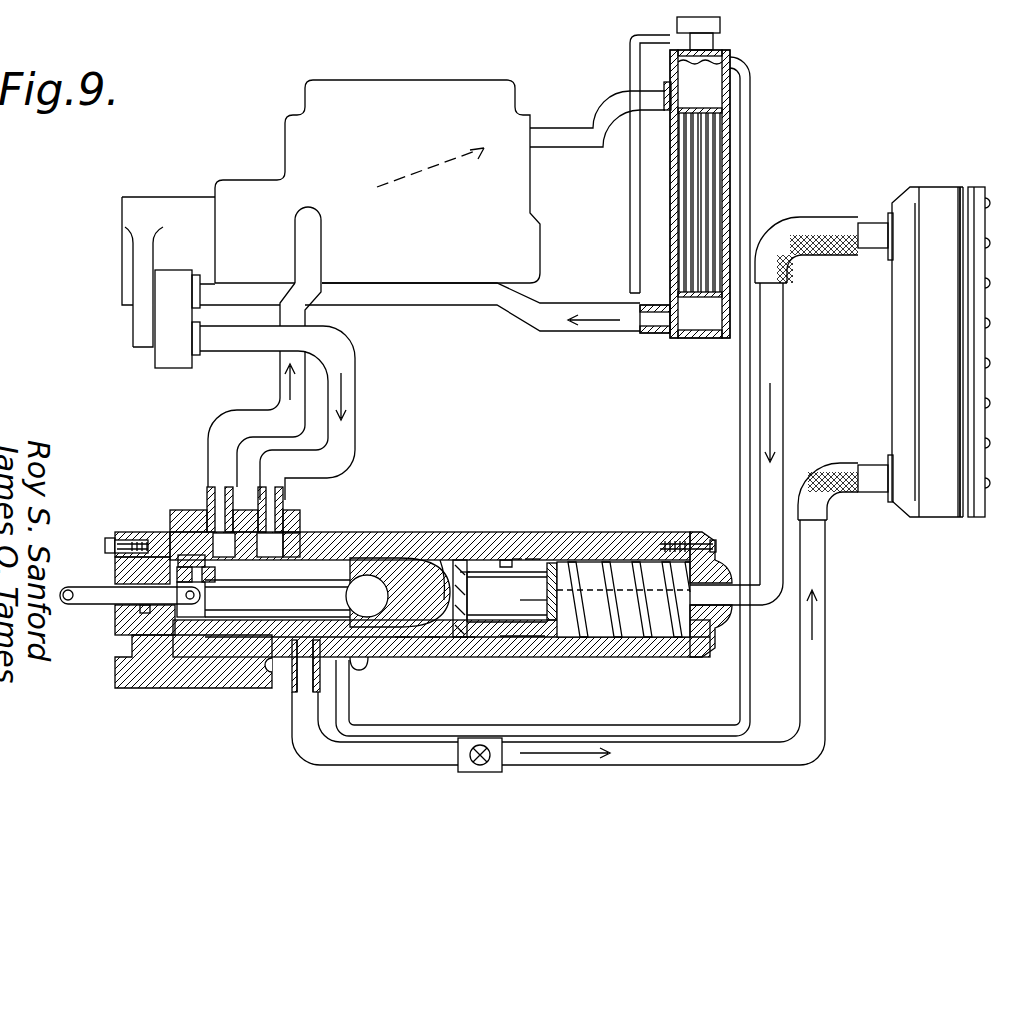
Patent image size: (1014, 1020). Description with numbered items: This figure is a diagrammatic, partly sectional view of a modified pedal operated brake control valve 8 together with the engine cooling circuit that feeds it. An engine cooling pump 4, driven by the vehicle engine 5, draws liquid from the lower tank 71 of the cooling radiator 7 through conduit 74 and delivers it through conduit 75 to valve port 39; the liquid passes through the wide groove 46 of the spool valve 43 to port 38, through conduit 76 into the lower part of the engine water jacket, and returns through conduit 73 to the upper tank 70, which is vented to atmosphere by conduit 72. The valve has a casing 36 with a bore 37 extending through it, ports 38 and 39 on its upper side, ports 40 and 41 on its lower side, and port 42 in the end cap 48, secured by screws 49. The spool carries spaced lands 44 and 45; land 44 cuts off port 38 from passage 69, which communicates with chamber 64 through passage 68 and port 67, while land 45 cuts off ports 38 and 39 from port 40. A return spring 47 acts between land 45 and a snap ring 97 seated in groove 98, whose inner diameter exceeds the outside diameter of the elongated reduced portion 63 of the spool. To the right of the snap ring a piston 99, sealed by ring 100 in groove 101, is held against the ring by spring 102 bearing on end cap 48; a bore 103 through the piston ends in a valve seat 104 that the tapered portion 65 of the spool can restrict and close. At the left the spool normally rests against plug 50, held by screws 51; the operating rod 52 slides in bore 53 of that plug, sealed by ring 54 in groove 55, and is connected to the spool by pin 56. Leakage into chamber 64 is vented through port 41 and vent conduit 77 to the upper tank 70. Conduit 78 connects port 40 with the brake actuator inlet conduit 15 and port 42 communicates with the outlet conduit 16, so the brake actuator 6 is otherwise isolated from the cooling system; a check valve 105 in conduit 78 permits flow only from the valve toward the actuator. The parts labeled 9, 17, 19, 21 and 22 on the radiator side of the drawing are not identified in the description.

The engine cooling pump 4 is at (160, 361).
The vehicle engine 5 is at (425, 73).
The brake actuator 6 is at (926, 363).
The cooling radiator 7 is at (696, 190).
The brake control valve 8 is at (405, 531).
The radiator tank 9 is at (900, 195).
The brake actuator inlet conduit 15 is at (870, 490).
The brake actuator outlet conduit 16 is at (866, 248).
The radiator core 17 is at (954, 364).
The pipe from radiator top to pump 19 is at (777, 325).
The core plate 21 is at (978, 520).
The cooling fins 22 is at (983, 440).
The casing 36 is at (380, 530).
The bore 37 is at (458, 562).
The port 38 is at (222, 547).
The port 39 is at (318, 560).
The port 40 is at (300, 672).
The port 41 is at (362, 658).
The port 42 is at (690, 640).
The spool valve 43 is at (333, 558).
The land 44 is at (172, 536).
The land 45 is at (382, 569).
The annular groove 46 is at (232, 660).
The return spring 47 is at (432, 640).
The end cap 48 is at (690, 540).
The screws 49 is at (716, 548).
The plug 50 is at (115, 565).
The screws 51 is at (108, 537).
The valve operating rod 52 is at (98, 606).
The bore 53 is at (115, 588).
The sealing ring 54 is at (145, 606).
The groove 55 is at (143, 617).
The pin 56 is at (185, 596).
The elongated portion 63 is at (400, 640).
The chamber 64 is at (466, 640).
The tapered valve portion 65 is at (440, 562).
The port 67 is at (350, 604).
The passage 68 is at (268, 605).
The passage 69 is at (208, 592).
The upper tank 70 is at (726, 95).
The lower tank 71 is at (704, 339).
The conduit 72 is at (636, 225).
The conduit 73 is at (560, 127).
The conduit 74 is at (601, 333).
The conduit 75 is at (357, 392).
The conduit 76 is at (244, 418).
The vent conduit 77 is at (752, 180).
The conduit 78 is at (828, 708).
The snap ring 97 is at (505, 560).
The groove 98 is at (462, 572).
The piston 99 is at (532, 584).
The sealing ring 100 is at (513, 562).
The groove 101 is at (522, 562).
The spring 102 is at (622, 562).
The bore 103 is at (527, 640).
The valve seat 104 is at (518, 601).
The check valve 105 is at (500, 766).